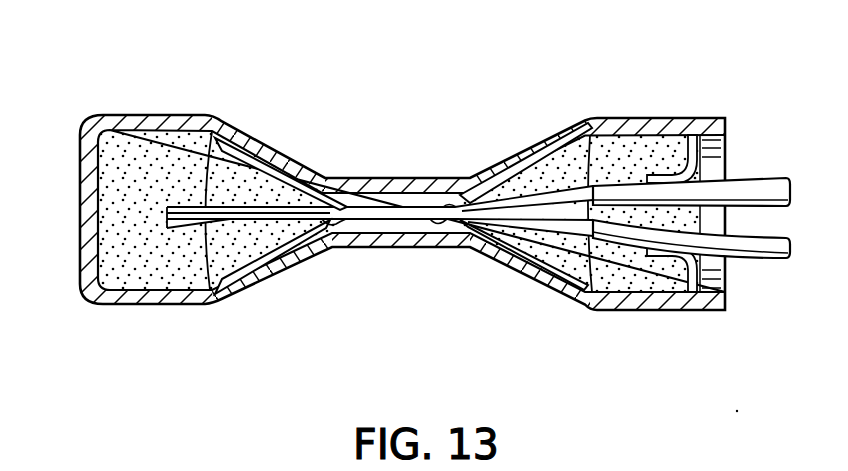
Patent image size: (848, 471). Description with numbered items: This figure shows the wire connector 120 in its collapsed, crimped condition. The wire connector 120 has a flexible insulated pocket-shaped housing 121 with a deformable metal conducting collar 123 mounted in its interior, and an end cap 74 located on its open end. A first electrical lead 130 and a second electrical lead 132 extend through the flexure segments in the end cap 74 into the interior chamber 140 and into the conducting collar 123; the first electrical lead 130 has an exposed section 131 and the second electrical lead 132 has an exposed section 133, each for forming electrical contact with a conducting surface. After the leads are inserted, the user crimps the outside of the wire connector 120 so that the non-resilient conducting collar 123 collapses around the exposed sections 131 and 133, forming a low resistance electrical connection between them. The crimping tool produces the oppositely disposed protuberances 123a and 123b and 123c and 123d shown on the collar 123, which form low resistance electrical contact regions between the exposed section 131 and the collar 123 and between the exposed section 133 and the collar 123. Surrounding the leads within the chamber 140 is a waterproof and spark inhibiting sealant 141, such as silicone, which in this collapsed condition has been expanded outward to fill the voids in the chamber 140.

The wire connector 120 is at (431, 209).
The housing 121 is at (80, 170).
The conducting collar 123 is at (380, 202).
The protuberance 123a is at (375, 186).
The protuberance 123b is at (323, 228).
The protuberance 123c is at (473, 190).
The protuberance 123d is at (428, 226).
The first electrical lead 130 is at (769, 180).
The exposed section 131 is at (572, 182).
The second electrical lead 132 is at (763, 250).
The exposed section 133 is at (543, 285).
The interior chamber 140 is at (138, 143).
The sealant 141 is at (245, 180).
The end cap 74 is at (668, 157).